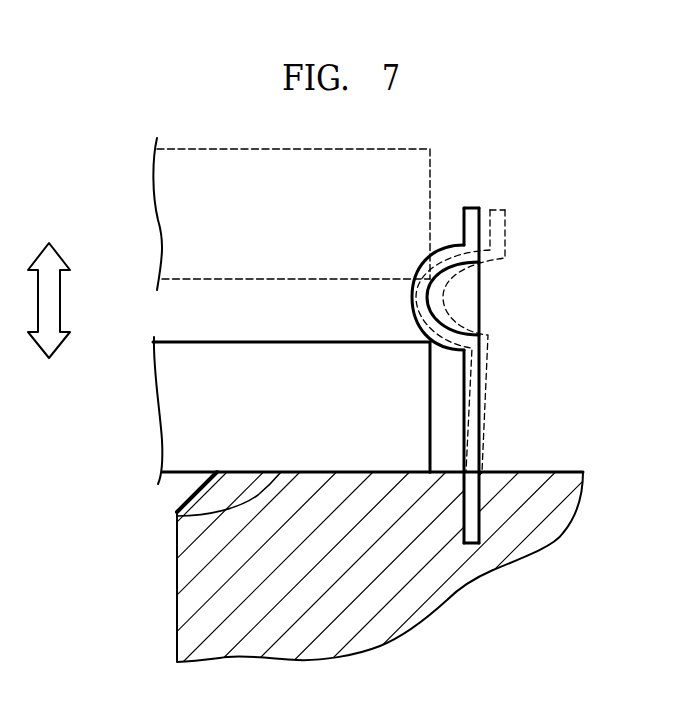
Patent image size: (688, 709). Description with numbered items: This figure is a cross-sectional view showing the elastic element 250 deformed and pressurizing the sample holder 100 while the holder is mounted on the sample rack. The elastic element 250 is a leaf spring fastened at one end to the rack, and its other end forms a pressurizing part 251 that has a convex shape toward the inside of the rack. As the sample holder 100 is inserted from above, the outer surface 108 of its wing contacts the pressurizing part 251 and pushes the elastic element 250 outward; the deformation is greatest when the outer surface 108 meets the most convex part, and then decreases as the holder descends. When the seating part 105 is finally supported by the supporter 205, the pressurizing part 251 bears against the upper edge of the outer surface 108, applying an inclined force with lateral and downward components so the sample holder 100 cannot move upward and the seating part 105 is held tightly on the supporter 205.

The sample holder 100 is at (173, 243).
The seating part 105 is at (240, 471).
The outer surface of the wing 108 is at (434, 416).
The supporter 205 is at (178, 517).
The elastic element 250 is at (480, 432).
The pressurizing part 251 is at (412, 300).